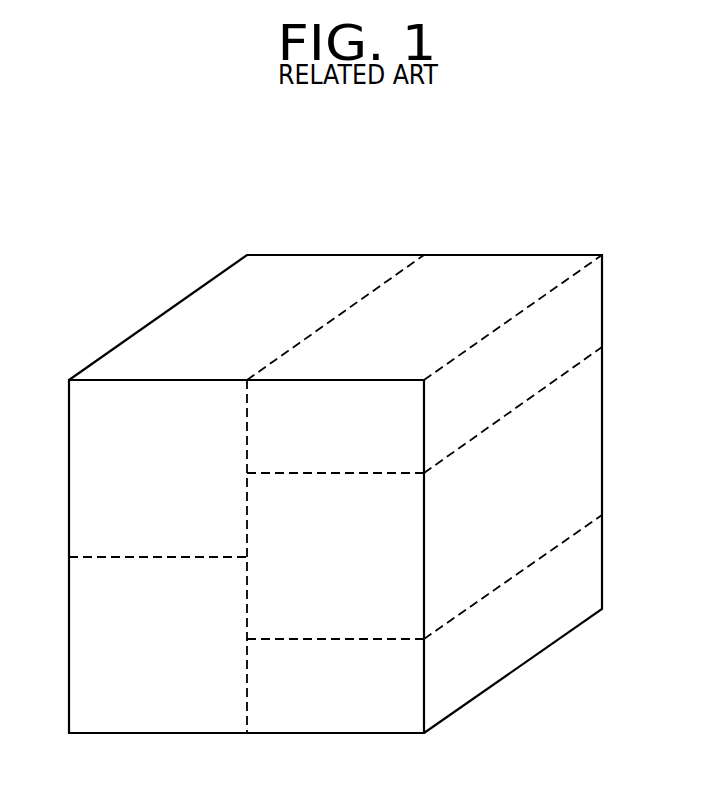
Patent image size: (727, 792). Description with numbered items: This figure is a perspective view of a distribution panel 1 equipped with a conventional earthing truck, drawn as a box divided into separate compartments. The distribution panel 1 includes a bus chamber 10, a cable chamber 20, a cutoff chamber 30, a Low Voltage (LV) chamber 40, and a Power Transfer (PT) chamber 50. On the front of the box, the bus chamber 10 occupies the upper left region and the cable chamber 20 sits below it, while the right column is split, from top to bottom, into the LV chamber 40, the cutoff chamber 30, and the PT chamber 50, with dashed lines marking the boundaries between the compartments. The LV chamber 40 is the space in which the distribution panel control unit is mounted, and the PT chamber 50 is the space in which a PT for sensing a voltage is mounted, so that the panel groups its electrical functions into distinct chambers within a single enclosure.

The distribution panel 1 is at (97, 278).
The bus chamber 10 is at (169, 481).
The cable chamber 20 is at (170, 654).
The cutoff chamber 30 is at (349, 569).
The Low Voltage (LV) chamber 40 is at (349, 443).
The Power Transfer (PT) chamber 50 is at (349, 701).